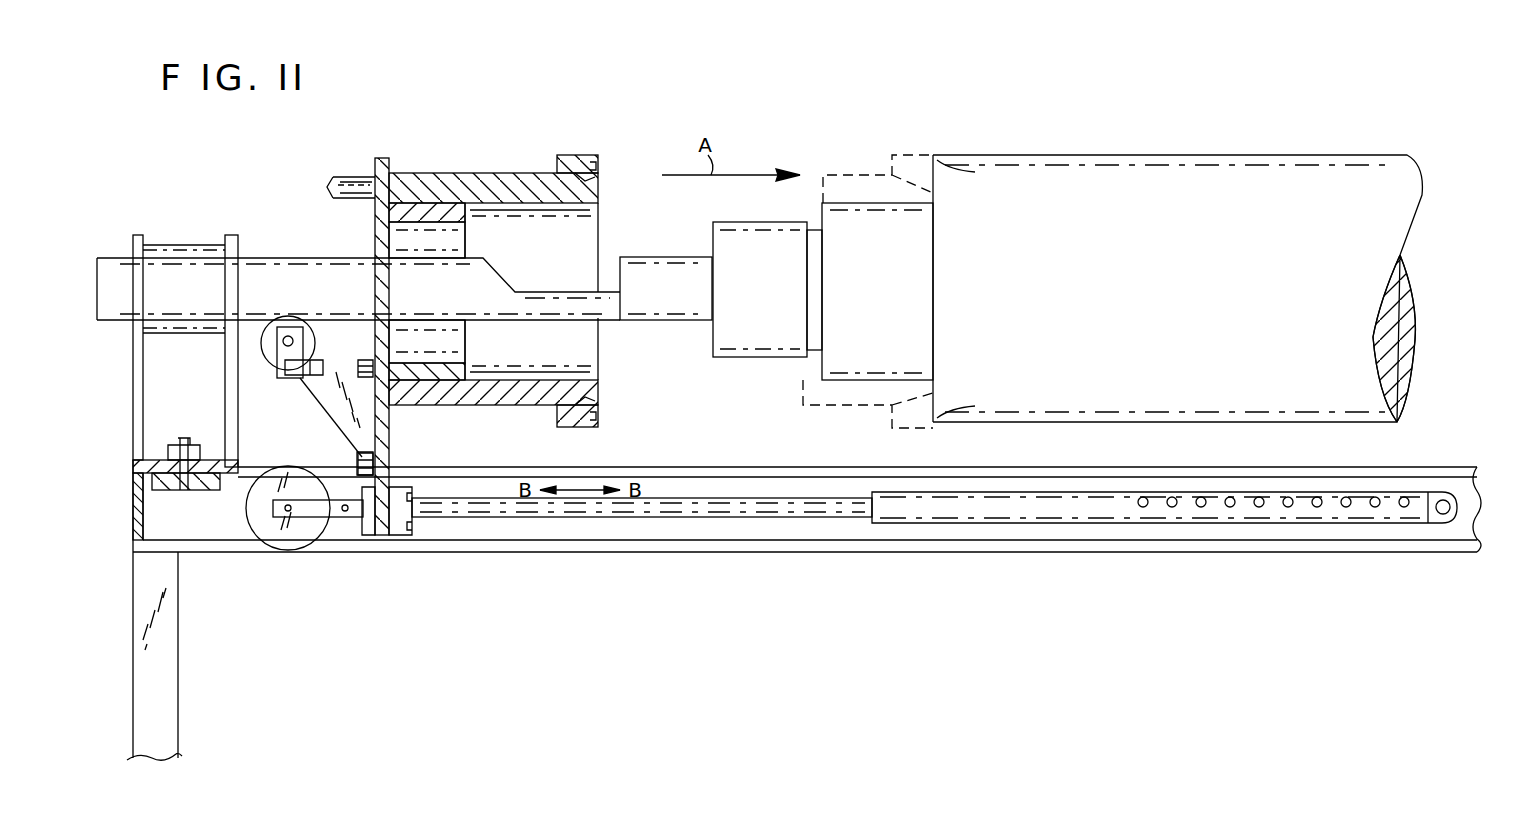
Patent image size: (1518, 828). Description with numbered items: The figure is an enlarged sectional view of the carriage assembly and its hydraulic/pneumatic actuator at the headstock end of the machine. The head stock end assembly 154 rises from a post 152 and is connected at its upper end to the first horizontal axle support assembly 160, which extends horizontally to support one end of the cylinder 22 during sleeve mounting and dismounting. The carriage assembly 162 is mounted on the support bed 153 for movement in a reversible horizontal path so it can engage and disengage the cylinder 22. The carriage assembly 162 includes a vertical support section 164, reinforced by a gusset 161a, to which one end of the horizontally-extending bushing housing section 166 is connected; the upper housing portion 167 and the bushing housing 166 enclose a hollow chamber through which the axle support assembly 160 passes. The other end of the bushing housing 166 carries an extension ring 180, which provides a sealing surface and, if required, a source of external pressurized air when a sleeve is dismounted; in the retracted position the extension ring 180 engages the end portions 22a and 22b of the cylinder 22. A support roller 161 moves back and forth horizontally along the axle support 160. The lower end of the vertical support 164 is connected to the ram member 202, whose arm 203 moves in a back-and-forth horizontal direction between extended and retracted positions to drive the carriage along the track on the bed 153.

The cylinder 22 is at (1122, 288).
The end portion of cylinder 22a is at (767, 289).
The end portion of cylinder 22b is at (935, 174).
The support post 152 is at (170, 683).
The support bed 153 is at (790, 552).
The head stock end assembly 154 is at (140, 193).
The first horizontal axle support assembly 160 is at (660, 320).
The support roller 161 is at (263, 350).
The gusset 161a is at (327, 417).
The carriage assembly 162 is at (412, 582).
The vertical support section 164 is at (377, 237).
The bushing housing section 166 is at (498, 407).
The upper bearing housing 167 is at (455, 200).
The extension ring 180 is at (598, 416).
The ram member 202 is at (1000, 517).
The arm 203 is at (650, 518).